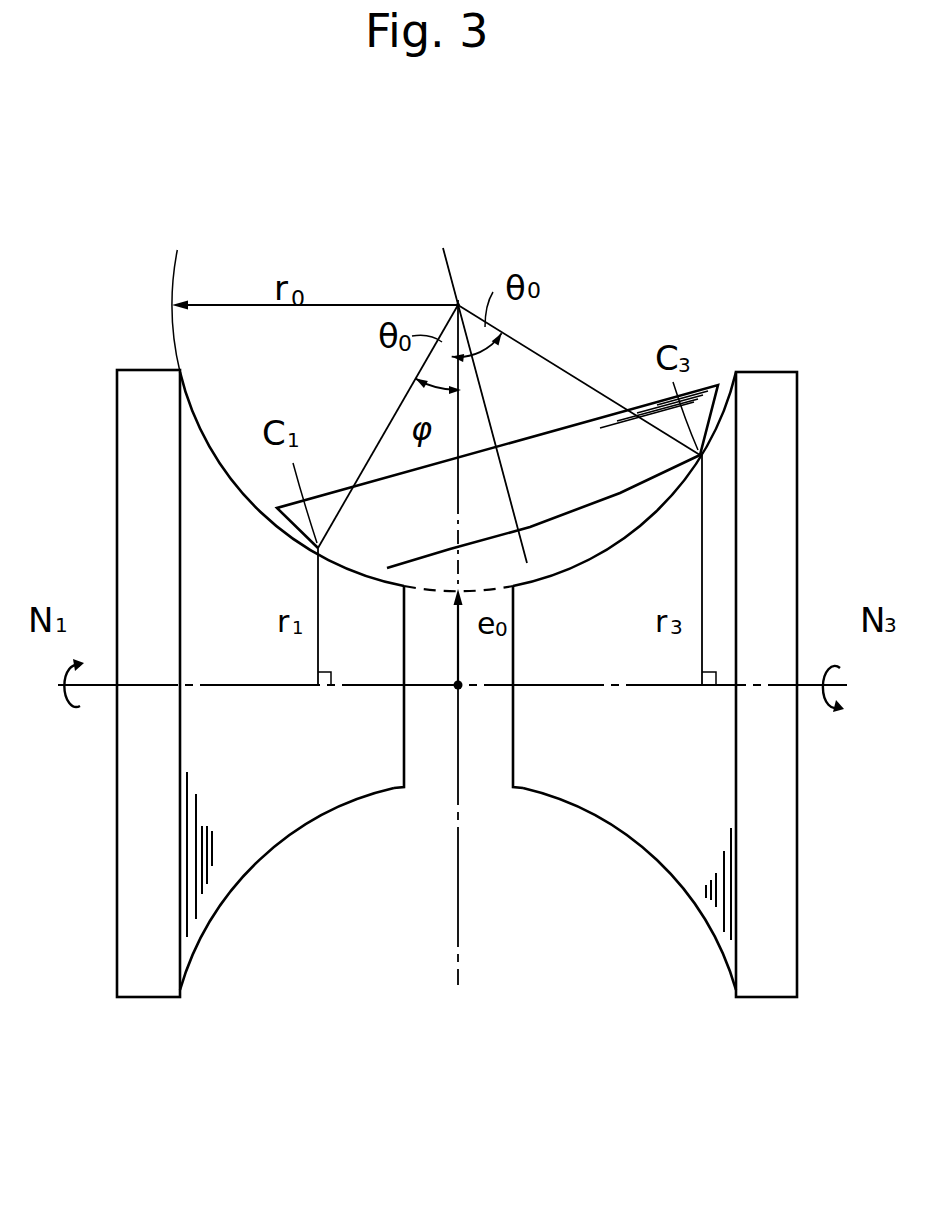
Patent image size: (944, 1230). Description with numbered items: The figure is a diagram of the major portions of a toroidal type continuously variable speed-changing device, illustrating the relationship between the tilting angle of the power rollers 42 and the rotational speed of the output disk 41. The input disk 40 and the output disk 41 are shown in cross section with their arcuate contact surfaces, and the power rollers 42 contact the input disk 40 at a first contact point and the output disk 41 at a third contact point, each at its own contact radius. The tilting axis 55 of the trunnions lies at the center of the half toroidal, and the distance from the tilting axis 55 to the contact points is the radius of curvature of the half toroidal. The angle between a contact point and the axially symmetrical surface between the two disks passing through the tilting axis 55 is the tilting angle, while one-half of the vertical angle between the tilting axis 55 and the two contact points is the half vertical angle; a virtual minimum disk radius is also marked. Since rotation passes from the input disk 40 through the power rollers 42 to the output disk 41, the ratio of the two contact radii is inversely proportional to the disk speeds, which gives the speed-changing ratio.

The input disk 40 is at (212, 467).
The output disk 41 is at (762, 400).
The power rollers 42 is at (575, 447).
The tilting axis 55 is at (456, 305).